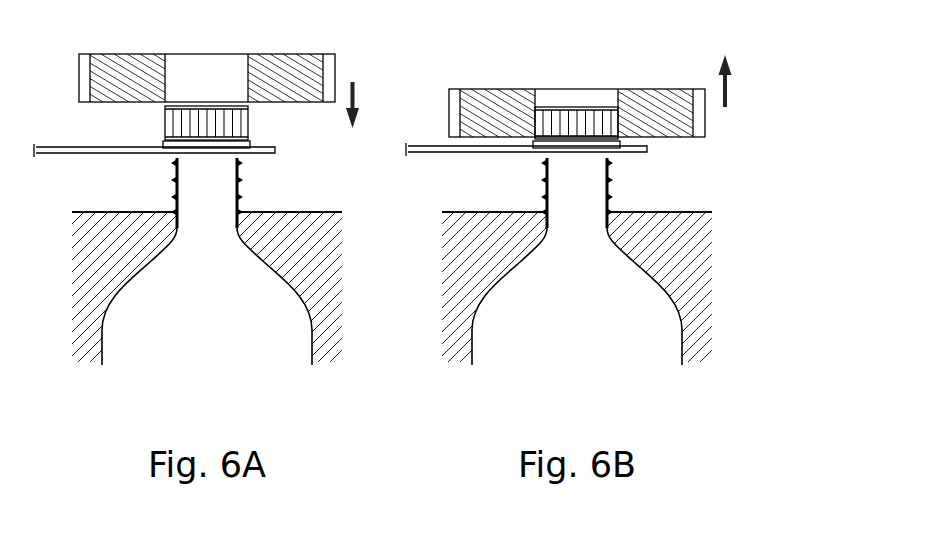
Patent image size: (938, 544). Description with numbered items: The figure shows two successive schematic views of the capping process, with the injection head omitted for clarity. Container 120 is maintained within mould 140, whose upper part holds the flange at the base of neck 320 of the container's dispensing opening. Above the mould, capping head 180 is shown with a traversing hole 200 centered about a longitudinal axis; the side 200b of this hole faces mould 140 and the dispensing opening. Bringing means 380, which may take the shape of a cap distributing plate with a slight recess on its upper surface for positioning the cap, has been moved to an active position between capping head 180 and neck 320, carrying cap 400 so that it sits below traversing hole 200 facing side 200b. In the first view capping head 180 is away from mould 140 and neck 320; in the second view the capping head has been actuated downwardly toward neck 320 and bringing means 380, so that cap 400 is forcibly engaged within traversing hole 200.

In FIG. 6A, the container 120 is at (223, 332).
In FIG. 6B, the container 120 is at (576, 320).
In FIG. 6A, the mould 140 is at (330, 270).
In FIG. 6B, the mould 140 is at (330, 270).
In FIG. 6A, the capping head 180 is at (295, 56).
In FIG. 6B, the capping head 180 is at (665, 95).
In FIG. 6A, the traversing hole 200 is at (234, 56).
In FIG. 6B, the traversing hole 200 is at (603, 90).
In FIG. 6A, the side of traversing hole 200b is at (167, 108).
In FIG. 6B, the side of traversing hole 200b is at (576, 144).
In FIG. 6A, the neck 320 is at (262, 186).
In FIG. 6B, the neck 320 is at (628, 193).
In FIG. 6A, the bringing means 380 is at (276, 151).
In FIG. 6B, the bringing means 380 is at (648, 151).
In FIG. 6A, the cap 400 is at (250, 126).
In FIG. 6B, the cap 400 is at (565, 107).